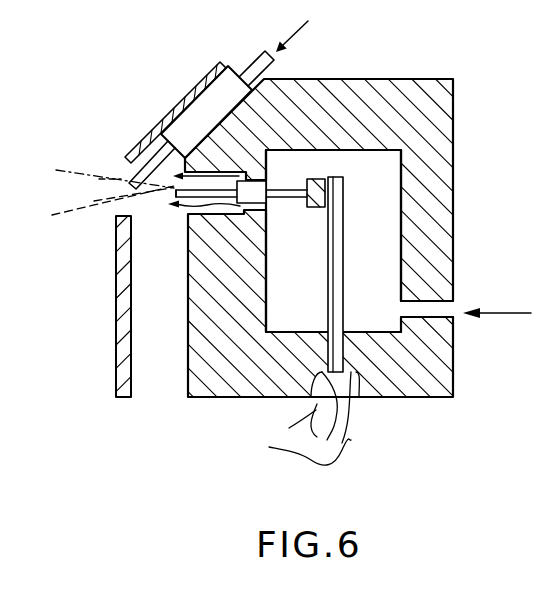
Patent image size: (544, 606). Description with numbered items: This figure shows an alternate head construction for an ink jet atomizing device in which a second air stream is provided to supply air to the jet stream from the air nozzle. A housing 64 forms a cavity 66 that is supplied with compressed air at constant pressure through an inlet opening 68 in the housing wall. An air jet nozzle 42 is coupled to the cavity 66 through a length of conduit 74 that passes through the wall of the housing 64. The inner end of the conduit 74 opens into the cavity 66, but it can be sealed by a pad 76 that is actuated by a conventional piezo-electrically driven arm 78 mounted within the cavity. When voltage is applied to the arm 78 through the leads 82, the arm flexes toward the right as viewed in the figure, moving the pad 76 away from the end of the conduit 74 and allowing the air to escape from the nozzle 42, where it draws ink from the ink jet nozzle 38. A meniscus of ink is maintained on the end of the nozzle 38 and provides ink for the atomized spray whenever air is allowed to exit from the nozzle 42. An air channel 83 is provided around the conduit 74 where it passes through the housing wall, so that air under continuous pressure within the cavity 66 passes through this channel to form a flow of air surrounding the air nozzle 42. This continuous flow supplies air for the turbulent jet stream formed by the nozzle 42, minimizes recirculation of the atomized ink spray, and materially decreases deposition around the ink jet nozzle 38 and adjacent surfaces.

The ink jet nozzle 38 is at (128, 184).
The air jet nozzle 42 is at (166, 190).
The housing 64 is at (449, 228).
The cavity 66 is at (378, 200).
The inlet opening 68 is at (443, 310).
The conduit 74 is at (286, 196).
The pad 76 is at (313, 206).
The piezo-electrically driven arm 78 is at (341, 266).
The leads 82 is at (313, 402).
The air channel 83 is at (247, 178).